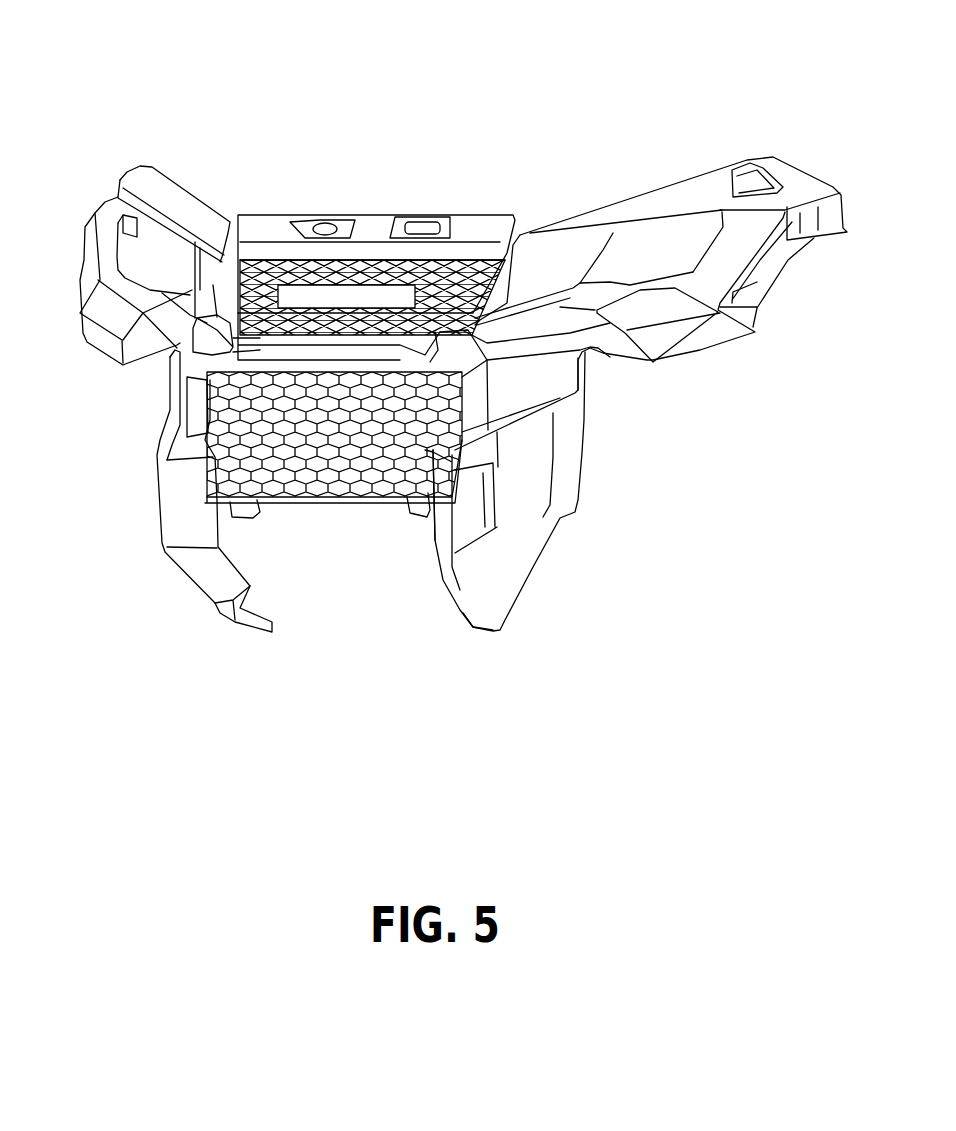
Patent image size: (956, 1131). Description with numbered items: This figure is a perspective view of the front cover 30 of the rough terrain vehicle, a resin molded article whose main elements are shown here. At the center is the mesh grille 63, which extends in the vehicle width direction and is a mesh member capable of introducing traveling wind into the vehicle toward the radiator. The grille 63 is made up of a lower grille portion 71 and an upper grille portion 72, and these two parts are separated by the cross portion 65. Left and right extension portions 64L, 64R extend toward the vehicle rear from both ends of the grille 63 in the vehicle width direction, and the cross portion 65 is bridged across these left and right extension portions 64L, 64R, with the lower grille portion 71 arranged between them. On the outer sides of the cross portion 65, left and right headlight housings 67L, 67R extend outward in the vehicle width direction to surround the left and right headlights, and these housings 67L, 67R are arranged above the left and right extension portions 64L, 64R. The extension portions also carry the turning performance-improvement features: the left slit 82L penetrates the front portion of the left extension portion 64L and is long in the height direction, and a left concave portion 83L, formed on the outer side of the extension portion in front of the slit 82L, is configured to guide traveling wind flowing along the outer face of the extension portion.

The front cover 30 is at (98, 157).
The right headlight housing 67R is at (160, 197).
The left headlight housing 67L is at (665, 197).
The cross portion 65 is at (300, 292).
The upper grille portion 72 is at (375, 265).
The lower grille portion 71 is at (375, 492).
The grille 63 is at (303, 508).
The right extension portion 64R is at (207, 567).
The left extension portion 64L is at (490, 593).
The left concave portion 83L is at (467, 505).
The left slit 82L is at (467, 513).